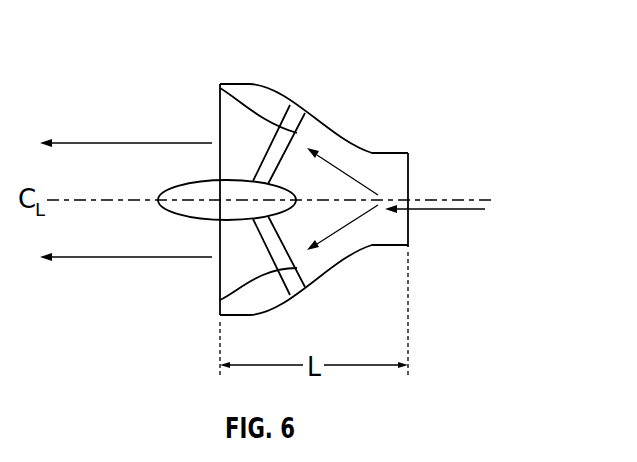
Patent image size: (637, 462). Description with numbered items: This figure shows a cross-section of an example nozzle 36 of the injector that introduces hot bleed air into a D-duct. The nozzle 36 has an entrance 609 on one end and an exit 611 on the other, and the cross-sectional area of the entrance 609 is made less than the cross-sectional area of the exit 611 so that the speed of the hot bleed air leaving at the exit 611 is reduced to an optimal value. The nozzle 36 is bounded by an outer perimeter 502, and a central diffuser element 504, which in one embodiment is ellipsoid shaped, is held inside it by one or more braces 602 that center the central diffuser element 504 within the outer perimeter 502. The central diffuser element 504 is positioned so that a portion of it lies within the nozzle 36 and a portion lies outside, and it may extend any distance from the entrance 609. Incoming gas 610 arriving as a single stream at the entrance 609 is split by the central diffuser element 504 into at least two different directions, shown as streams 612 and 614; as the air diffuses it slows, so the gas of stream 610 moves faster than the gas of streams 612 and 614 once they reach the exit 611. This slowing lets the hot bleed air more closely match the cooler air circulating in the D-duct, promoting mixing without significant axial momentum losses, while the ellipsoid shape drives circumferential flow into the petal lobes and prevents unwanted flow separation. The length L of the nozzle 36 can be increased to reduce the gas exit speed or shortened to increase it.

The nozzle 36 is at (216, 47).
The outer perimeter 502 is at (330, 128).
The central diffuser element 504 is at (198, 203).
The braces 602 is at (220, 86).
The entrance 609 is at (408, 168).
The incoming gas 610 is at (442, 212).
The exit 611 is at (220, 130).
The first direction stream 612 is at (365, 186).
The second direction stream 614 is at (320, 243).